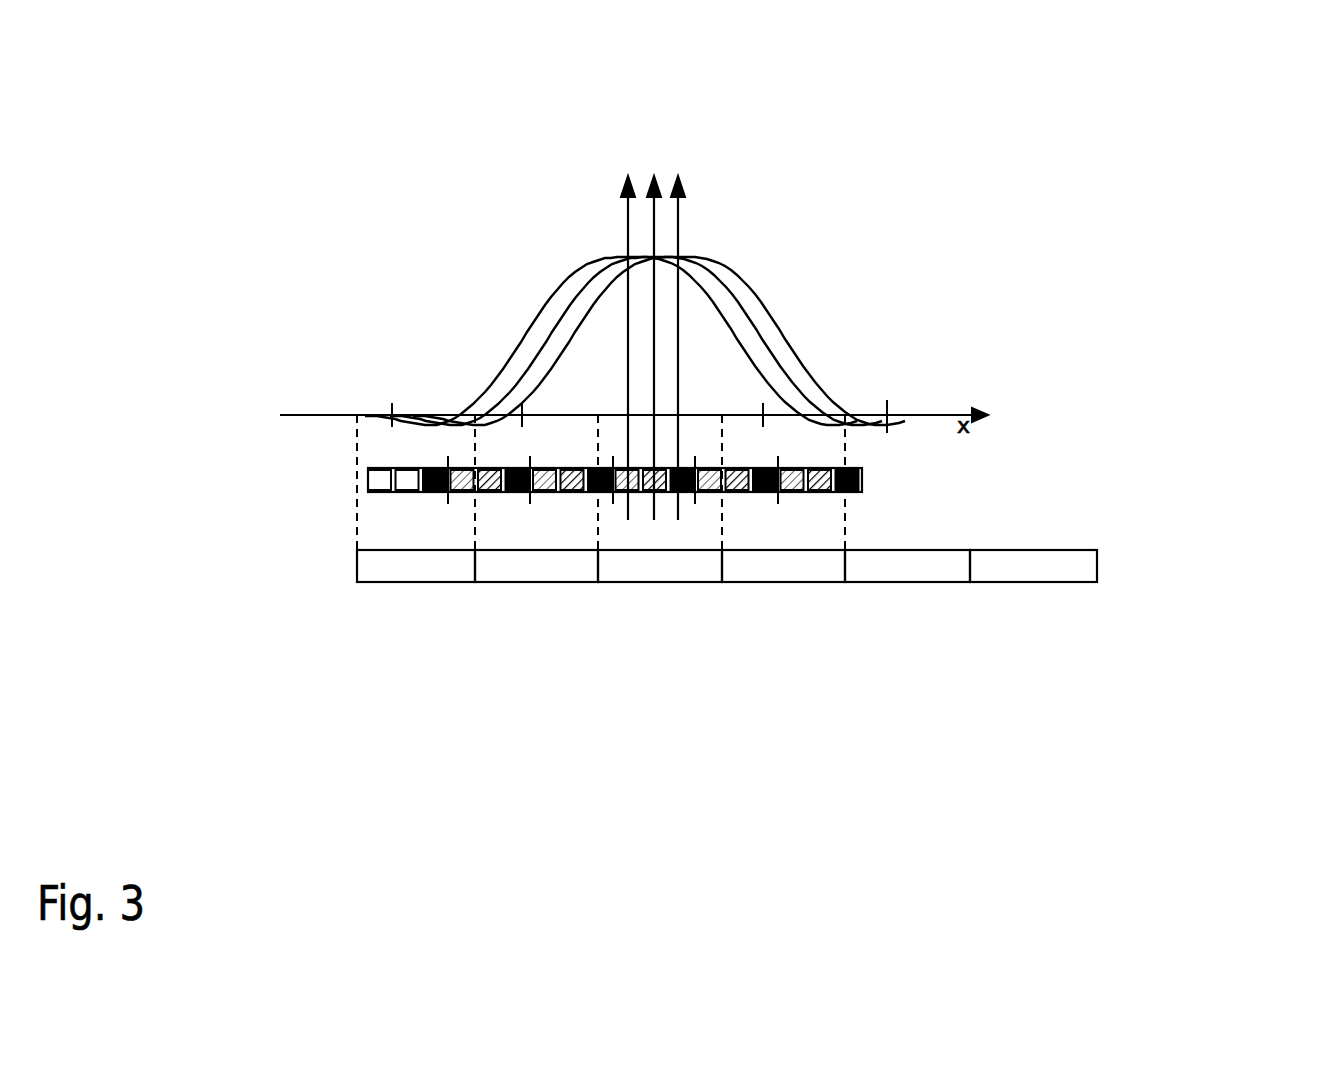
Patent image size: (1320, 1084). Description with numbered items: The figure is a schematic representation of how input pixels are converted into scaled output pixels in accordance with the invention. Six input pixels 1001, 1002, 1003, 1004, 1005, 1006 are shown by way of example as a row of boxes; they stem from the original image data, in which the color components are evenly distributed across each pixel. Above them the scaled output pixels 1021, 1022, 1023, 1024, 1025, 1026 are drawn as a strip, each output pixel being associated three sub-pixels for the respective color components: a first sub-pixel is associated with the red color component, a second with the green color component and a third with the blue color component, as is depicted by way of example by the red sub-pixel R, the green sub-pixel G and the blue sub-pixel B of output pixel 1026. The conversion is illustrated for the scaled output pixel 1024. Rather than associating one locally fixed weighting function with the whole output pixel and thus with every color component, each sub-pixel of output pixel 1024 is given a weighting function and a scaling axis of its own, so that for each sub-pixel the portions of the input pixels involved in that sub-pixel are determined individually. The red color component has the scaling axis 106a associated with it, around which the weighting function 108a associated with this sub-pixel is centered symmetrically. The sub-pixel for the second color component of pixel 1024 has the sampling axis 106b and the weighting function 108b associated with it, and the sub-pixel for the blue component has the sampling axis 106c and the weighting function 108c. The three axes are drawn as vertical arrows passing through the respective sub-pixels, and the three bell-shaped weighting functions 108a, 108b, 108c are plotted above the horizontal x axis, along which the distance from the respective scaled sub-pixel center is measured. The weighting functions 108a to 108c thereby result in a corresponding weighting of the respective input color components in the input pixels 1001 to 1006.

The input pixel 1001 is at (357, 582).
The input pixel 1002 is at (492, 577).
The input pixel 1003 is at (703, 575).
The input pixel 1004 is at (832, 573).
The input pixel 1005 is at (960, 582).
The input pixel 1006 is at (1093, 550).
The scaled output pixel 1021 is at (378, 505).
The scaled output pixel 1022 is at (487, 505).
The scaled output pixel 1023 is at (573, 505).
The scaled output pixel 1024 is at (637, 505).
The scaled output pixel 1025 is at (741, 493).
The scaled output pixel 1026 is at (862, 480).
The scaling axis 106a is at (625, 227).
The sampling axis 106b is at (653, 212).
The sampling axis 106c is at (680, 199).
The weighting function 108a is at (537, 330).
The weighting function 108b is at (547, 363).
The weighting function 108c is at (742, 290).
The red sub-pixel R is at (790, 468).
The green sub-pixel G is at (823, 468).
The blue sub-pixel B is at (860, 468).